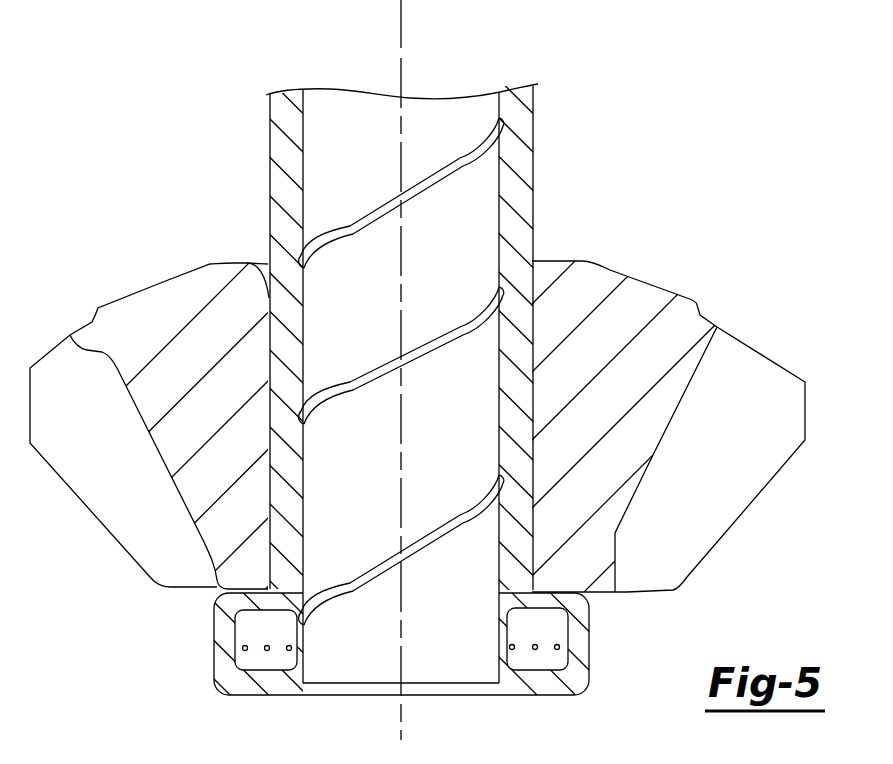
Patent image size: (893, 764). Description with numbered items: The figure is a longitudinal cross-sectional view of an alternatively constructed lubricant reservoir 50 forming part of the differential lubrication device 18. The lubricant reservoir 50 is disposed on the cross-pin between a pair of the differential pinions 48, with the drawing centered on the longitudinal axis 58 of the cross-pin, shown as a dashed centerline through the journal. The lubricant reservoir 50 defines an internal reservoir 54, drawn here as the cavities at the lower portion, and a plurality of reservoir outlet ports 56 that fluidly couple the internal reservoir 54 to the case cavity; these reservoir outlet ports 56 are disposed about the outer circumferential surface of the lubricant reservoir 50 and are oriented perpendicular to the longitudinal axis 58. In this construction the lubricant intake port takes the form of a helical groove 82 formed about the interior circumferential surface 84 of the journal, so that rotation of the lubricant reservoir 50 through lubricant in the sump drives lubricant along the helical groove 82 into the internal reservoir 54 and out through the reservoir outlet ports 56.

The differential lubrication device 18 is at (578, 690).
The differential pinions 48 is at (605, 285).
The lubricant reservoir 50 is at (222, 628).
The internal reservoir 54 is at (541, 664).
The reservoir outlet ports 56 is at (240, 648).
The longitudinal axis 58 is at (401, 48).
The helical groove 82 is at (440, 183).
The interior circumferential surface 84 is at (498, 108).